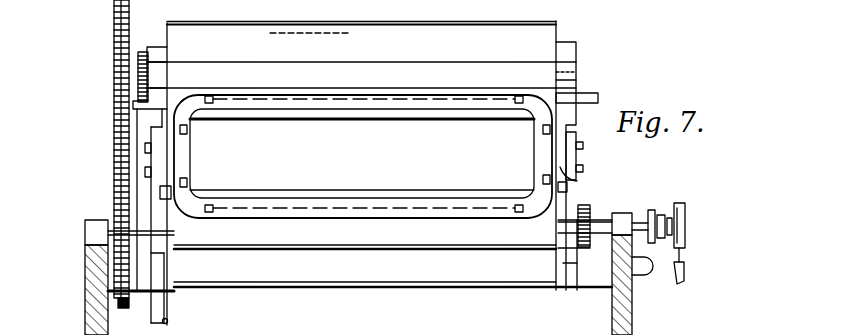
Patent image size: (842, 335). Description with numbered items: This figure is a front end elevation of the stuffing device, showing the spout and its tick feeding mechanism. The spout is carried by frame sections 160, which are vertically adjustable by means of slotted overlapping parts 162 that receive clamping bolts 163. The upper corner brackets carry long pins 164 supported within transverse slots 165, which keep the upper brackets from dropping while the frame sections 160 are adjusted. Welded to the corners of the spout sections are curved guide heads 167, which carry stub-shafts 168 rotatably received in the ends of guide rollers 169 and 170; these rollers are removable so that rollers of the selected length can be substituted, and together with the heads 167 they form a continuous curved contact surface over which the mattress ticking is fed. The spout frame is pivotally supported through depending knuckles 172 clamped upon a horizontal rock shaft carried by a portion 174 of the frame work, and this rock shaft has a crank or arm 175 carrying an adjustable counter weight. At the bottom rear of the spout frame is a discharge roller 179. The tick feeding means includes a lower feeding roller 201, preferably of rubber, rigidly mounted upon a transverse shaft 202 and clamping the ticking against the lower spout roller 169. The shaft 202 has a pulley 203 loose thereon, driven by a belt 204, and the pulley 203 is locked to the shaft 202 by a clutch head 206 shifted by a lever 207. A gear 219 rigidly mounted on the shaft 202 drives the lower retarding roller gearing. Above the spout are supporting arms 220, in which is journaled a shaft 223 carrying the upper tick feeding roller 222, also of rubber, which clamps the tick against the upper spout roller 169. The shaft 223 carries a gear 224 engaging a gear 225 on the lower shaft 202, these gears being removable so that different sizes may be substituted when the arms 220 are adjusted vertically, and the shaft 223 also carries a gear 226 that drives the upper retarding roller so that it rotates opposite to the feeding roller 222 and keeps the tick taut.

The frame sections 160 is at (351, 173).
The overlapping parts 162 is at (570, 186).
The clamping bolts 163 is at (583, 146).
The long pins 164 is at (598, 98).
The transverse slots 165 is at (567, 93).
The curved guide heads 167 is at (194, 100).
The stub-shafts 168 is at (220, 98).
The guide rollers 169 is at (352, 115).
The guide rollers 170 is at (190, 157).
The depending knuckles 172 is at (165, 266).
The portion of the frame work 174 is at (622, 321).
The crank or arm 175 is at (168, 321).
The discharge roller 179 is at (393, 274).
The lower feeding roller 201 is at (365, 237).
The transverse shaft 202 is at (601, 225).
The pulley 203 is at (687, 226).
The belt 204 is at (686, 271).
The clutch head 206 is at (661, 212).
The lever 207 is at (653, 270).
The gear 219 is at (586, 252).
The supporting arms 220 is at (157, 48).
The upper tick feeding roller 222 is at (343, 59).
The shaft 223 is at (160, 78).
The gear 224 is at (114, 25).
The gear 225 is at (117, 188).
The gear 226 is at (138, 62).